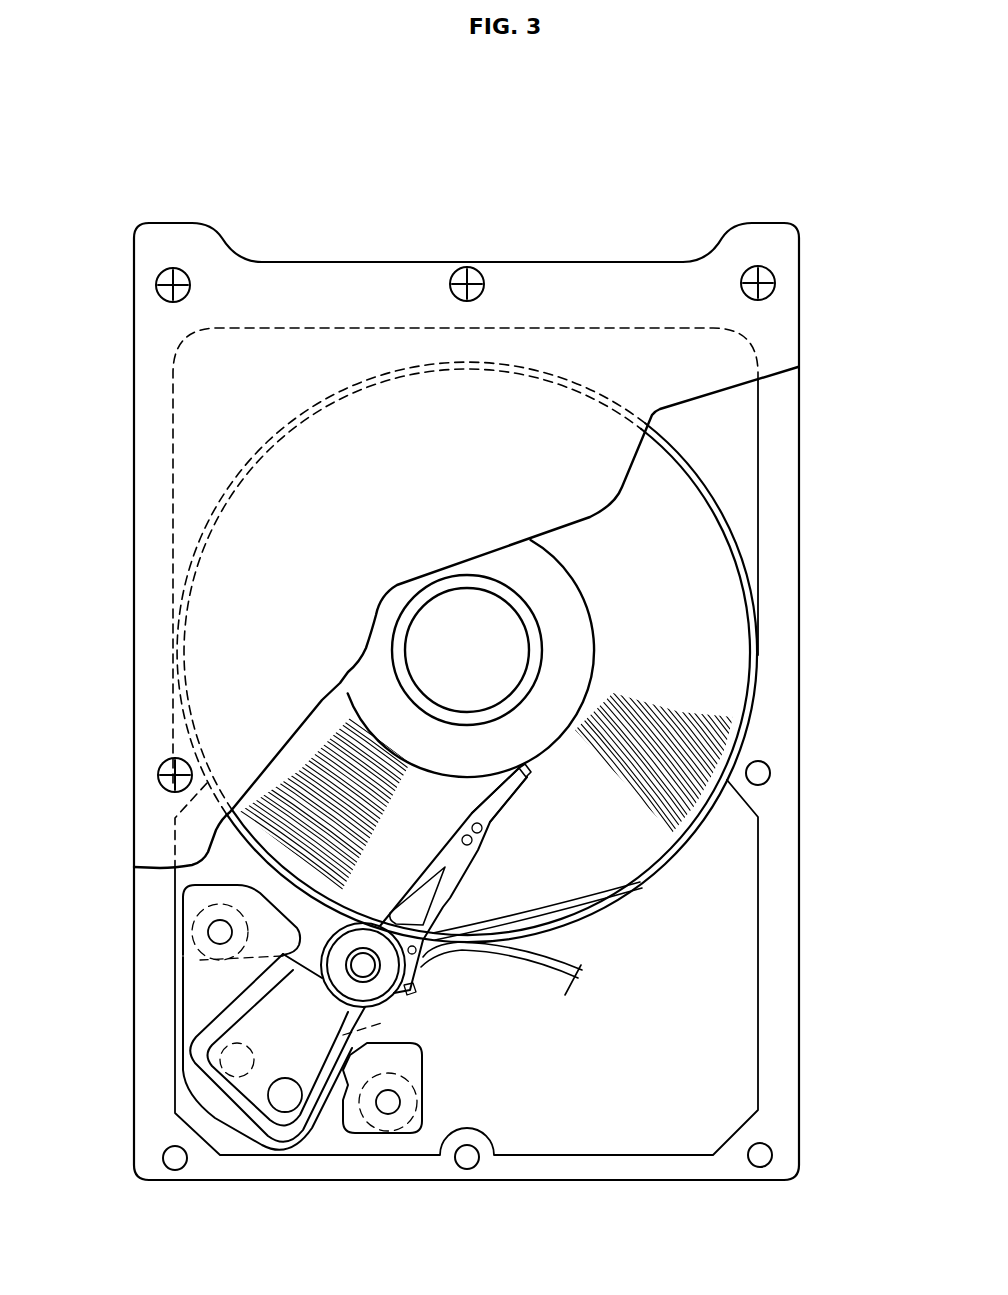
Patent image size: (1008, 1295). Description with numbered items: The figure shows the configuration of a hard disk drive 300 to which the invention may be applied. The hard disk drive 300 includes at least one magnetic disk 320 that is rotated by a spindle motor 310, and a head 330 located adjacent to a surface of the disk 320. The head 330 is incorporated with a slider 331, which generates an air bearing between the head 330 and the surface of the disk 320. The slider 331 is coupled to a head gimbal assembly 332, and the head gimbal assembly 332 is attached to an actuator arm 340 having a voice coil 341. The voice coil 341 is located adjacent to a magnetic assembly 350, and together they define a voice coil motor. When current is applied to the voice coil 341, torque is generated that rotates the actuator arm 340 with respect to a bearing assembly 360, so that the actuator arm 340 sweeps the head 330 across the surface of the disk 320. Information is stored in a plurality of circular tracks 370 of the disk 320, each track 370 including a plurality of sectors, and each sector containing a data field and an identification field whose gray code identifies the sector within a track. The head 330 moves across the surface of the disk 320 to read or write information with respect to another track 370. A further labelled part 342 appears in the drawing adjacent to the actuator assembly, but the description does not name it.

The hard disk drive 300 is at (800, 185).
The spindle motor 310 is at (443, 625).
The magnetic disk 320 is at (722, 581).
The head 330 is at (528, 778).
The slider 331 is at (492, 818).
The head gimbal assembly 332 is at (466, 904).
The actuator arm 340 is at (280, 990).
The voice coil 341 is at (210, 1052).
The yoke 342 is at (335, 1115).
The magnetic assembly 350 is at (220, 1000).
The bearing assembly 360 is at (374, 990).
The circular tracks 370 is at (328, 765).